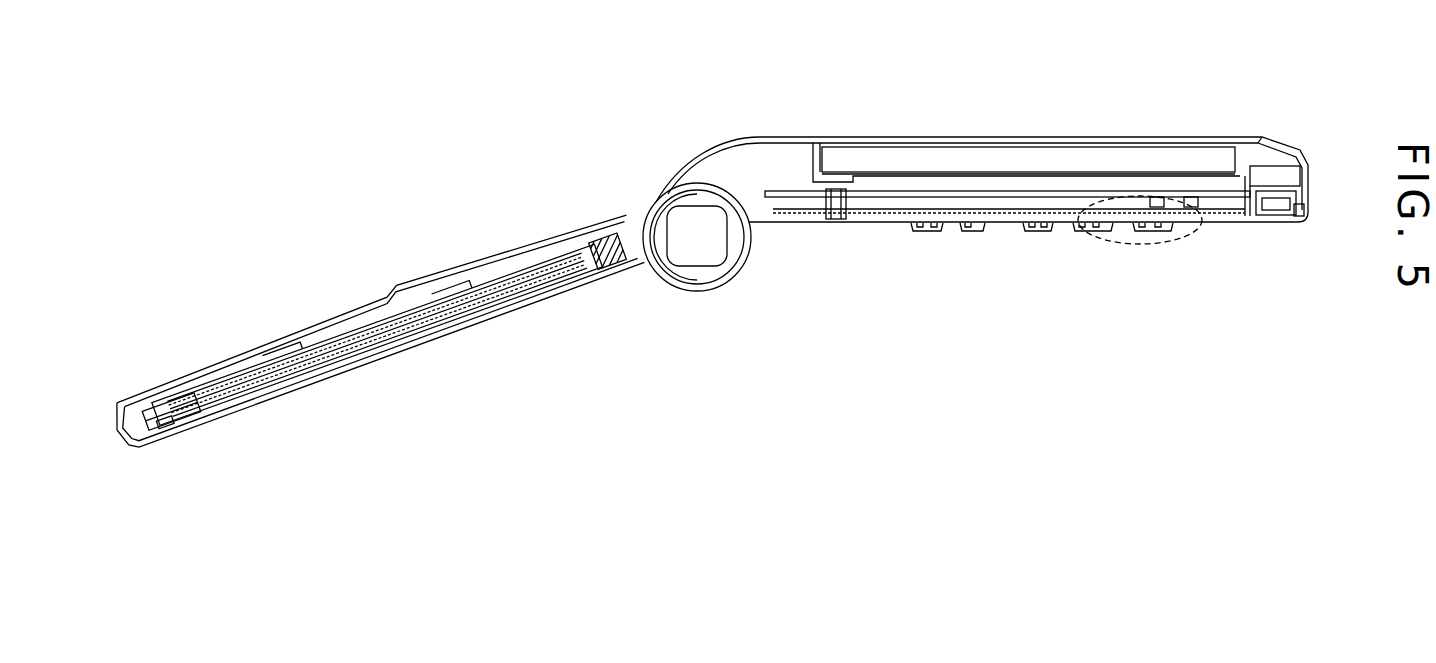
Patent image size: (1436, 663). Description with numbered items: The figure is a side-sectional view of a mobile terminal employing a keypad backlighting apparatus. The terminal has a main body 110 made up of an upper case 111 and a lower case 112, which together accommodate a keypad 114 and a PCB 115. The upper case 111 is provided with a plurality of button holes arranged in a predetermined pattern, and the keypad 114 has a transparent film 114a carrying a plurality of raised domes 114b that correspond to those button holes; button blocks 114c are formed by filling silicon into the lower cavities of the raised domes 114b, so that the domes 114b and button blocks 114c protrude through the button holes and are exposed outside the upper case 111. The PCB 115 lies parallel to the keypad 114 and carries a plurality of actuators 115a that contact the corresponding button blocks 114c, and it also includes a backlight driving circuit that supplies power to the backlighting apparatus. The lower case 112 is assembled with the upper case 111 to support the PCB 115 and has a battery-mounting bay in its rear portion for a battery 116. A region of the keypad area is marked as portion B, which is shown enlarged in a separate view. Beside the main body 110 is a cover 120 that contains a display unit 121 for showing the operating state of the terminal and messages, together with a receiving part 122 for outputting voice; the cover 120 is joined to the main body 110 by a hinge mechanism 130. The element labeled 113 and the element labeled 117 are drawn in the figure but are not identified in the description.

The main body 110 is at (946, 133).
The upper case 111 is at (1307, 310).
The lower case 112 is at (1301, 150).
The end block 113 is at (1266, 300).
The keypad 114 is at (956, 300).
The transparent film 114a is at (1104, 233).
The raised domes 114b is at (1028, 302).
The button blocks 114c is at (1147, 300).
The PCB 115 is at (1087, 205).
The actuators 115a is at (1157, 205).
The battery 116 is at (1212, 82).
The display 117 is at (1053, 152).
The cover 120 is at (298, 322).
The display unit 121 is at (367, 440).
The receiving part 122 is at (182, 480).
The hinge mechanism 130 is at (696, 358).
The portion B is at (1220, 288).